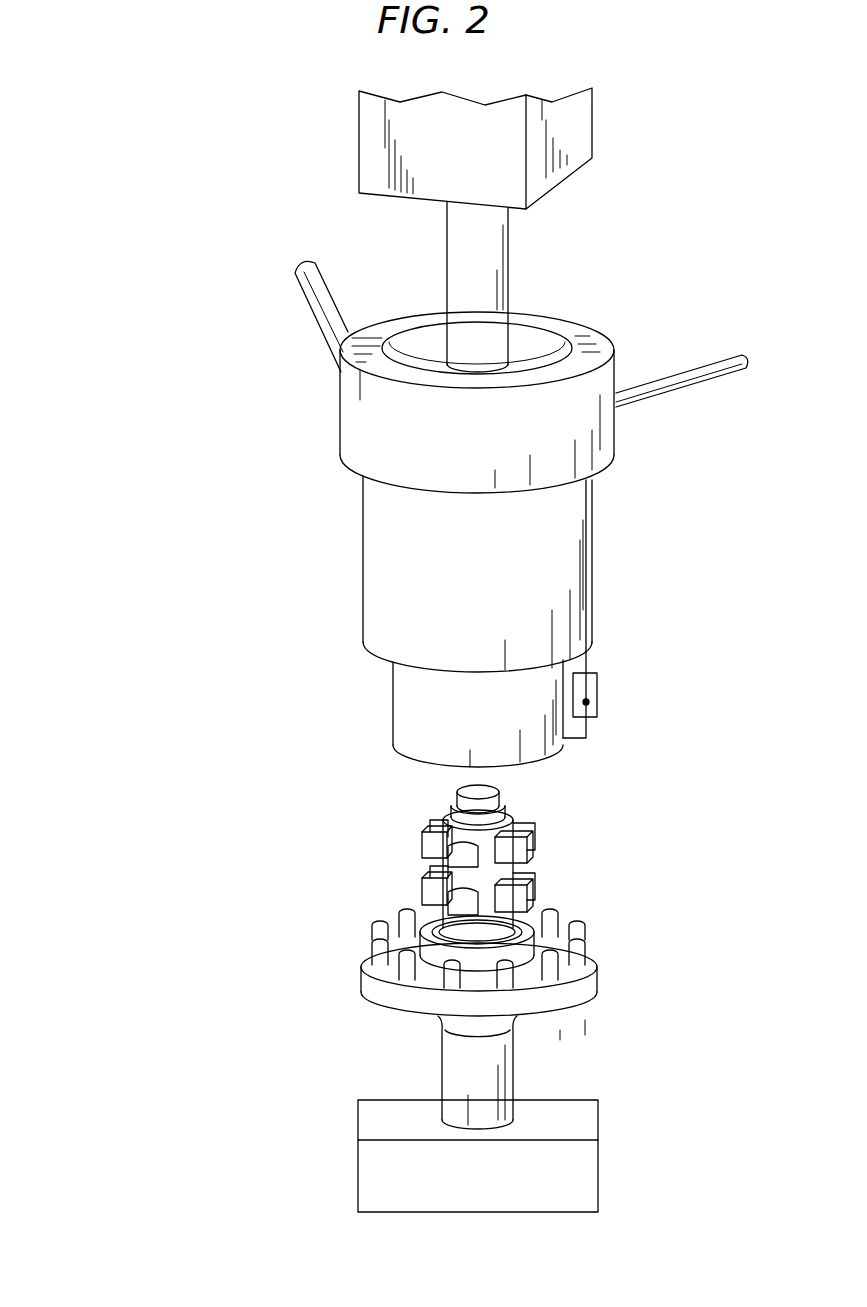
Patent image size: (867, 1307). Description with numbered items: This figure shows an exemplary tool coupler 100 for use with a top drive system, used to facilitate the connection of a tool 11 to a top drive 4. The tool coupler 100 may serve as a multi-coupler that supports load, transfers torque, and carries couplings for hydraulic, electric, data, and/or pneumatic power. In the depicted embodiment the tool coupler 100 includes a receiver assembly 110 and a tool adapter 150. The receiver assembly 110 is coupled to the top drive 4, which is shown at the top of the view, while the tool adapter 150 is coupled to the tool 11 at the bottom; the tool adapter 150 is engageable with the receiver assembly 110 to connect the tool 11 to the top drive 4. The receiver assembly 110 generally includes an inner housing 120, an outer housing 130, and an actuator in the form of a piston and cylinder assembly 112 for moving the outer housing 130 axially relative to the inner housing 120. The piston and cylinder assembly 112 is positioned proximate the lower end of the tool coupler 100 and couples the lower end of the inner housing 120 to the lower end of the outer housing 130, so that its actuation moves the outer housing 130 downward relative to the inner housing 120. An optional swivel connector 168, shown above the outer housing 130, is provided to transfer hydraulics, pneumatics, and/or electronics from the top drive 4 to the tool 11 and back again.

The top drive 4 is at (577, 147).
The tool 11 is at (598, 1160).
The tool coupler 100 is at (412, 695).
The receiver assembly 110 is at (456, 514).
The piston and cylinder assembly 112 is at (597, 693).
The inner housing 120 is at (405, 715).
The outer housing 130 is at (385, 555).
The tool adapter 150 is at (362, 912).
The swivel connector 168 is at (352, 415).